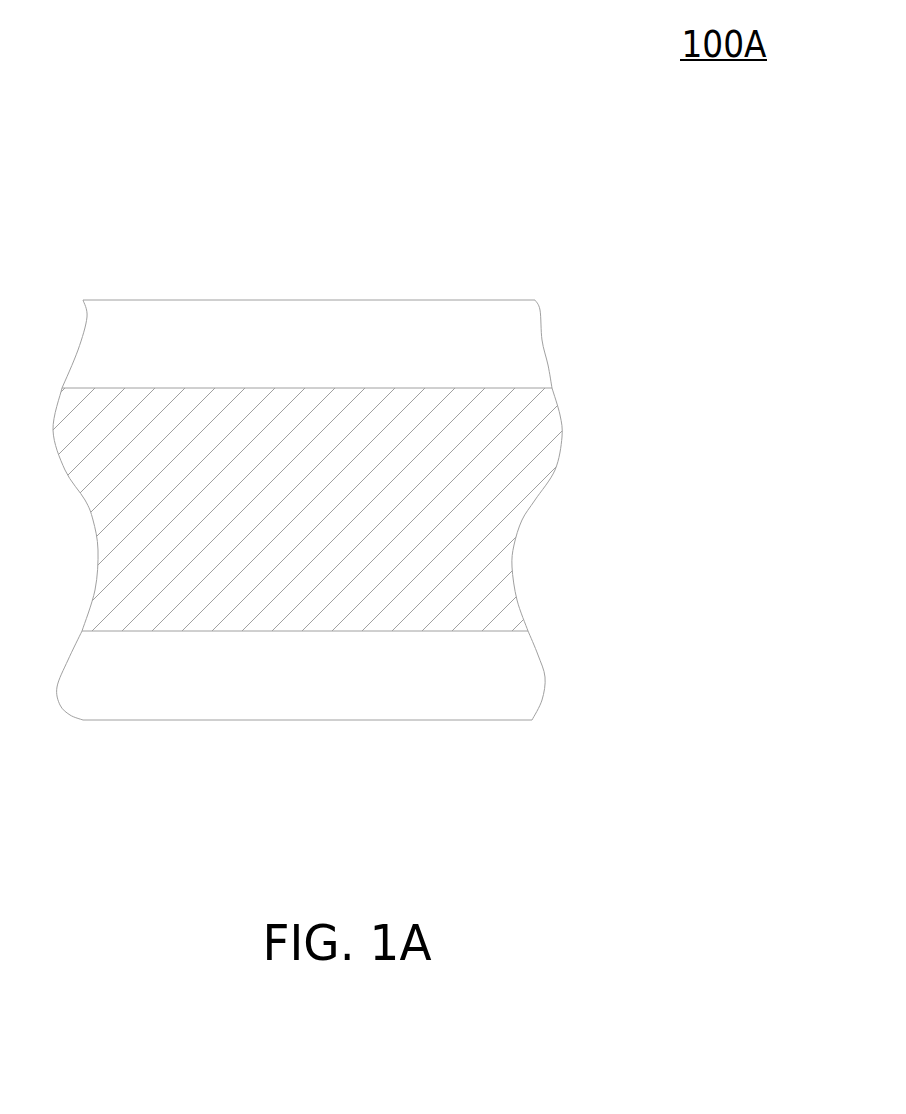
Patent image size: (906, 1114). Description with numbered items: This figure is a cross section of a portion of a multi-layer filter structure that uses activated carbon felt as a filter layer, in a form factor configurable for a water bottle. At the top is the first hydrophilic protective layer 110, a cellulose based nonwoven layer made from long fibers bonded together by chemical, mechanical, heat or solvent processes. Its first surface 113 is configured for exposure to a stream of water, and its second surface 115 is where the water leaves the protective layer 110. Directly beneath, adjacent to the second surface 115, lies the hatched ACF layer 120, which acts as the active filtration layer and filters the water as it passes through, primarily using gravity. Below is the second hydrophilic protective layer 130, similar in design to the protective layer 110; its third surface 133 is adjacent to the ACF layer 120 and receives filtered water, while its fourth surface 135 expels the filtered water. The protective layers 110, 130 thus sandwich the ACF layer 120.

The first hydrophilic protective layer 110 is at (542, 340).
The first surface 113 is at (292, 300).
The second surface 115 is at (408, 388).
The ACF layer 120 is at (515, 552).
The second hydrophilic protective layer 130 is at (545, 675).
The third surface 133 is at (178, 631).
The fourth surface 135 is at (370, 720).